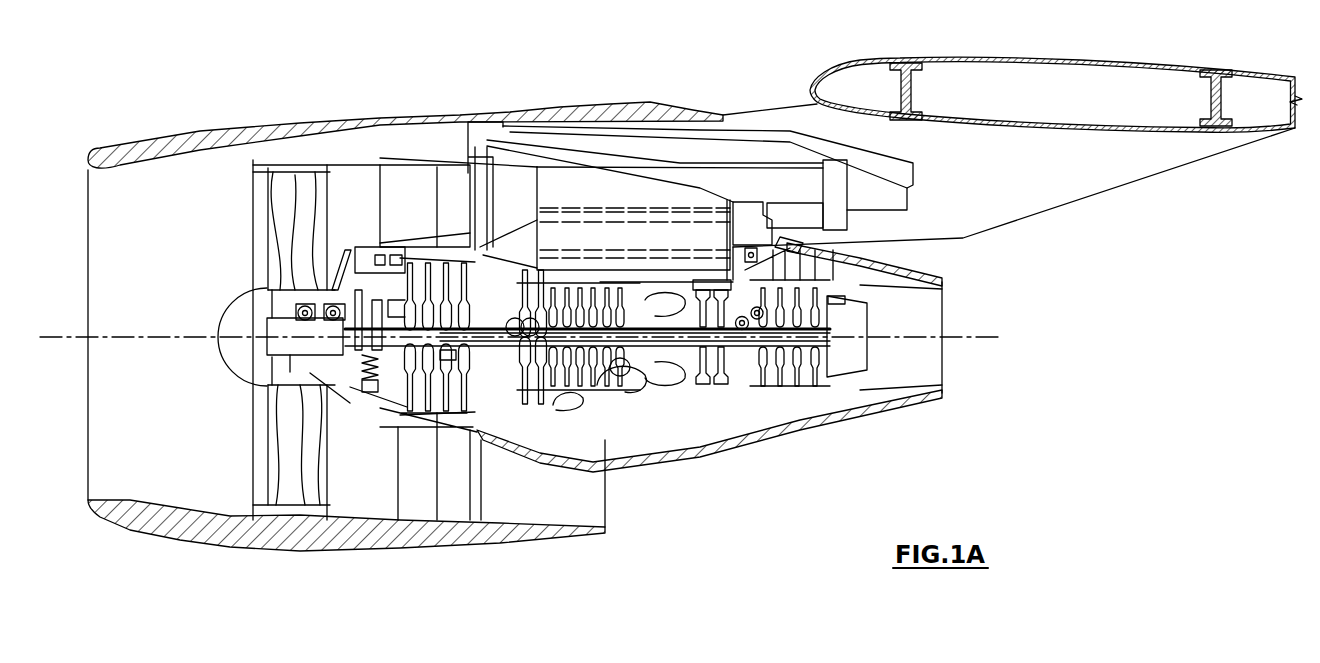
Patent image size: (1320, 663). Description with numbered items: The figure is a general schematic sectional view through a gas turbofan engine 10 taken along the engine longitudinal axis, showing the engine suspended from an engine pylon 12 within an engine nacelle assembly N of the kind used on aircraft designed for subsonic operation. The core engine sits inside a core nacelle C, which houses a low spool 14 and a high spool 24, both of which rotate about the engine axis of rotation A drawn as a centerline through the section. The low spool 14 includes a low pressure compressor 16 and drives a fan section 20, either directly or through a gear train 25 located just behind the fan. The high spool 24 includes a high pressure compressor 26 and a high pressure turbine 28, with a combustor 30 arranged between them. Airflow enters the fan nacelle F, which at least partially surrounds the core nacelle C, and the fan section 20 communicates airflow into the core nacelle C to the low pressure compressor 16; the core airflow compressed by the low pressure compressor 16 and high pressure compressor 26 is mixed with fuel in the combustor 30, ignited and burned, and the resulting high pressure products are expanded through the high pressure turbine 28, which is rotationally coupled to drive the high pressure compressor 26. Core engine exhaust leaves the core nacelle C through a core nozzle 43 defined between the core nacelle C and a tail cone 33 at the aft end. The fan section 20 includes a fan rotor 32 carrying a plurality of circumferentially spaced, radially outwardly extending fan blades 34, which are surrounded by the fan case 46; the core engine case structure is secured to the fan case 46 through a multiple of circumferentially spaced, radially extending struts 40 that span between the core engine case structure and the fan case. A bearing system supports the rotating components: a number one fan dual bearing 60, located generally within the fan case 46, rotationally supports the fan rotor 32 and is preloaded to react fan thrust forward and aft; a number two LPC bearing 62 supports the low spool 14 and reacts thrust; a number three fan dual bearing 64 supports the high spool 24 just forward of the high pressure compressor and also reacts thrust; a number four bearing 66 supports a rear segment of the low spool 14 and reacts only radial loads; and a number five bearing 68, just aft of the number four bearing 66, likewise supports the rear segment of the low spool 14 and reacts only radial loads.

The gas turbofan engine 10 is at (520, 177).
The engine pylon 12 is at (665, 125).
The low spool 14 is at (456, 350).
The low pressure compressor 16 is at (437, 263).
The fan section 20 is at (346, 397).
The high spool 24 is at (680, 350).
The gear train 25 is at (337, 395).
The high pressure compressor 26 is at (648, 395).
The high pressure turbine 28 is at (741, 330).
The combustor 30 is at (668, 380).
The fan rotor 32 is at (243, 396).
The tail cone 33 is at (866, 373).
The fan blades 34 is at (275, 450).
The struts 40 is at (450, 192).
The core nozzle 43 is at (923, 315).
The fan case 46 is at (347, 505).
The #1 fan dual bearing 60 is at (320, 298).
The #2 LPC bearing 62 is at (447, 362).
The #3 fan dual bearing 64 is at (540, 394).
The #4 bearing 66 is at (749, 343).
The #5 bearing 68 is at (845, 280).
The engine axis of rotation A is at (985, 337).
The core nacelle C is at (675, 452).
The fan nacelle F is at (215, 545).
The engine nacelle assembly N is at (503, 556).